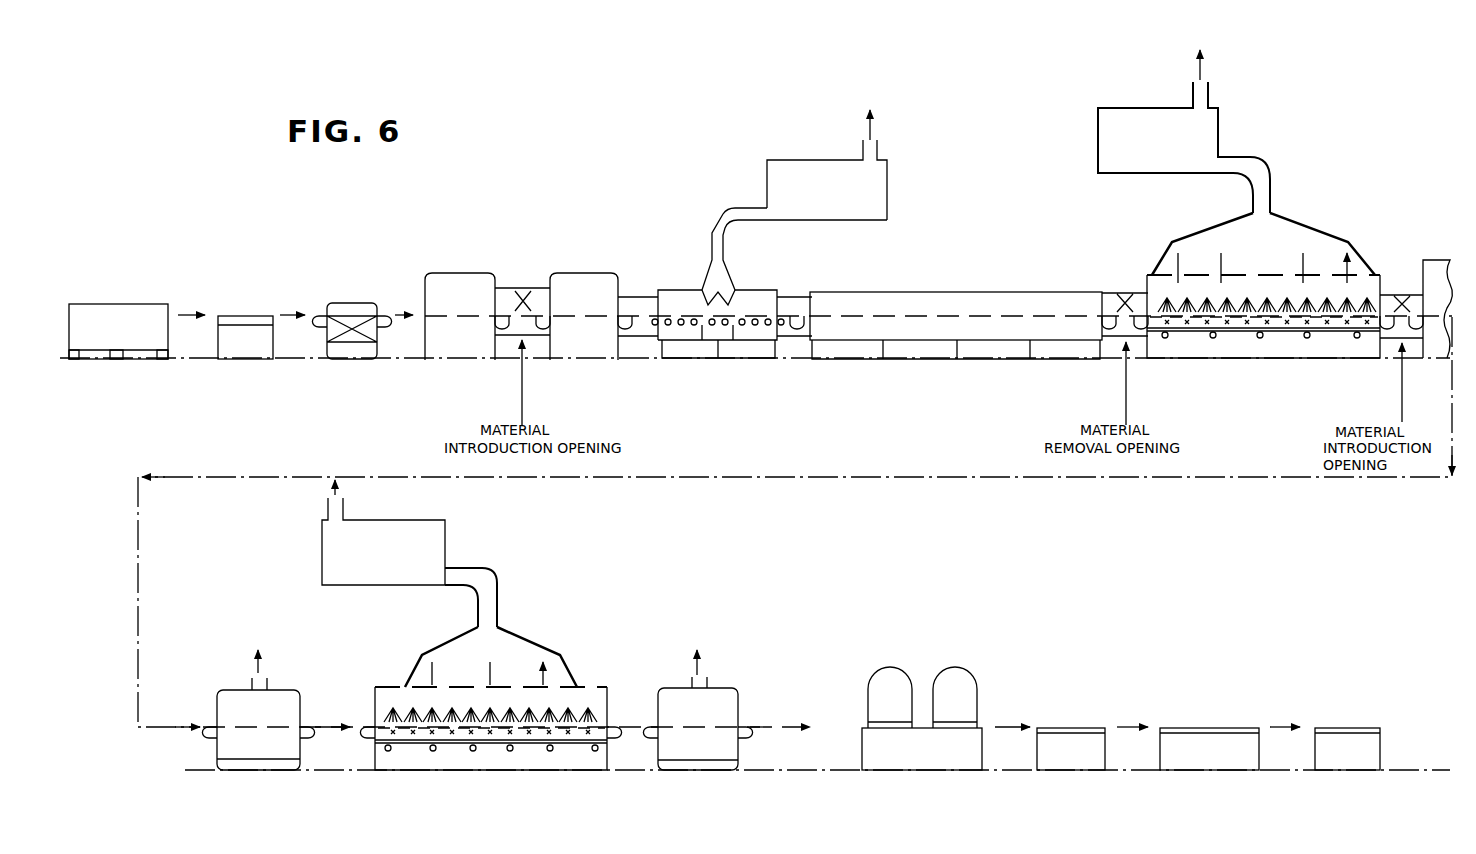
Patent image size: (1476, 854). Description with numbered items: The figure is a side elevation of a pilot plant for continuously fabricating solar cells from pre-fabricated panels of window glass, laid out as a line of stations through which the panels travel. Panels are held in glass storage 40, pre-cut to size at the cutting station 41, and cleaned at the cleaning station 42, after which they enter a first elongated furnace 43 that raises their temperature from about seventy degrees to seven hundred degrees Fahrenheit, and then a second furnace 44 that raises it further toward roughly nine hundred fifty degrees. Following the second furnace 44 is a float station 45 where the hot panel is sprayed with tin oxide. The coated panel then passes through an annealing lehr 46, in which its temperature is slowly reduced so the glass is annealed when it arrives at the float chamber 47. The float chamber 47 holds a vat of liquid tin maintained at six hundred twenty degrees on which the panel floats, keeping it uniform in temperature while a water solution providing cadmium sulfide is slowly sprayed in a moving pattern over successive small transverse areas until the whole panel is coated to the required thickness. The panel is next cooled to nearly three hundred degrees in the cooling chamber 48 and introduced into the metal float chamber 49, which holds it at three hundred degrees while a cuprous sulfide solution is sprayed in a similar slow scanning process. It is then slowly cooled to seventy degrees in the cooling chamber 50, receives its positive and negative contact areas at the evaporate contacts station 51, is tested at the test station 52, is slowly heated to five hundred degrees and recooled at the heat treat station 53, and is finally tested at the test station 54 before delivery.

The glass panel storage 40 is at (141, 305).
The cutting station 41 is at (250, 316).
The cleaning station 42 is at (353, 303).
The first elongated furnace 43 is at (436, 278).
The second furnace 44 is at (607, 282).
The float station 45 is at (762, 290).
The annealing lehr 46 is at (952, 300).
The float chamber 47 is at (1337, 240).
The cooling chamber 48 is at (292, 693).
The metal float chamber 49 is at (560, 655).
The cooling chamber 50 is at (730, 690).
The contact deposition station 51 is at (975, 737).
The test station 52 is at (1087, 740).
The heat treating station 53 is at (1207, 743).
The final test station 54 is at (1343, 742).